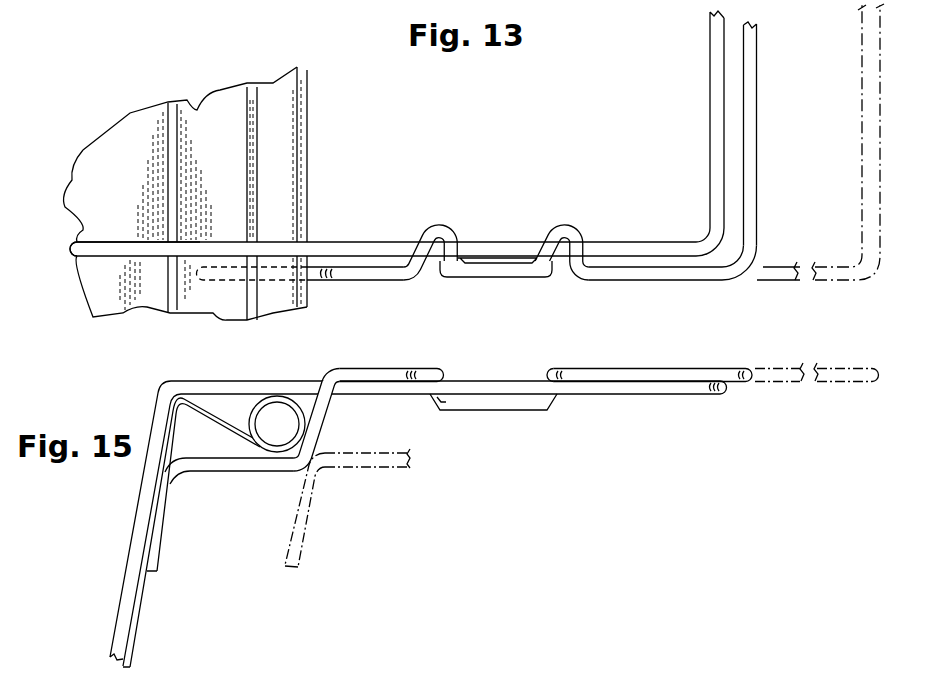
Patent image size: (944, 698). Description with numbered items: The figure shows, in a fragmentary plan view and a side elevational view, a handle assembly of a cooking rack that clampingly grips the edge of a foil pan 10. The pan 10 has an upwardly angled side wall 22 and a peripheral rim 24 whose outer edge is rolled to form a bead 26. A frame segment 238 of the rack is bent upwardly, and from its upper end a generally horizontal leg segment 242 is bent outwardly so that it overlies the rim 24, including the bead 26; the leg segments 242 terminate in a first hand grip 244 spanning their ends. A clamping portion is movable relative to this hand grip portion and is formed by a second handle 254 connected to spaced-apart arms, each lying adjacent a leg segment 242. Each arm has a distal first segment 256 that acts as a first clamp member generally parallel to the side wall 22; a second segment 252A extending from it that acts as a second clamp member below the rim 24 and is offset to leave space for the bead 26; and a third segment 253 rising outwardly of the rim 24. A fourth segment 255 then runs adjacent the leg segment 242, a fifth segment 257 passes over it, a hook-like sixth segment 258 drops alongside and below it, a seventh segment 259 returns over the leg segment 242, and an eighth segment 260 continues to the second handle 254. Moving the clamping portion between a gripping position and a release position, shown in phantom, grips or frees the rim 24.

In FIG. 13, the pan 10 is at (108, 138).
In FIG. 13, the side wall 22 is at (147, 117).
In FIG. 15, the side wall 22 is at (132, 632).
In FIG. 13, the rim 24 is at (233, 102).
In FIG. 15, the rim 24 is at (215, 405).
In FIG. 13, the bead 26 is at (297, 112).
In FIG. 15, the bead 26 is at (300, 400).
In FIG. 13, the frame segment 238 is at (190, 247).
In FIG. 15, the frame segment 238 is at (133, 552).
In FIG. 13, the leg segment 242 is at (362, 248).
In FIG. 15, the leg segment 242 is at (632, 396).
In FIG. 13, the first hand grip 244 is at (720, 98).
In FIG. 13, the second segment 252A is at (262, 262).
In FIG. 15, the second segment 252A is at (340, 453).
In FIG. 15, the third segment 253 is at (326, 405).
In FIG. 13, the second handle 254 is at (865, 98).
In FIG. 15, the second handle 254 is at (862, 366).
In FIG. 13, the fourth segment 255 is at (392, 275).
In FIG. 15, the fourth segment 255 is at (425, 370).
In FIG. 15, the first segment 256 is at (163, 548).
In FIG. 13, the fifth segment 257 is at (414, 244).
In FIG. 15, the fifth segment 257 is at (443, 374).
In FIG. 13, the sixth segment 258 is at (495, 272).
In FIG. 15, the sixth segment 258 is at (500, 408).
In FIG. 13, the seventh segment 259 is at (602, 232).
In FIG. 15, the seventh segment 259 is at (552, 374).
In FIG. 13, the eighth segment 260 is at (703, 277).
In FIG. 15, the eighth segment 260 is at (688, 366).